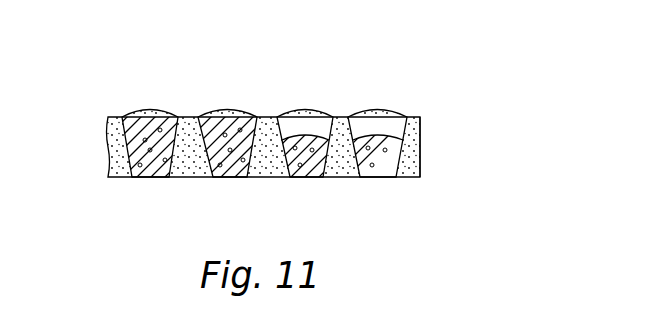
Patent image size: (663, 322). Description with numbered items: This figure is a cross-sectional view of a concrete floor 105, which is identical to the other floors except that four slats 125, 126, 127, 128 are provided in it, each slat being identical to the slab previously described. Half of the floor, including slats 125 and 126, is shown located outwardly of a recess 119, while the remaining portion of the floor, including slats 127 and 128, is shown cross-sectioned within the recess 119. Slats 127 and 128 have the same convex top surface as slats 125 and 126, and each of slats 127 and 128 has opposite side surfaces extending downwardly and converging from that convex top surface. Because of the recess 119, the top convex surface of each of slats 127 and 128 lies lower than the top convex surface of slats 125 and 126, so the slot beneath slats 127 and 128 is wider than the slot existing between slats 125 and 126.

The concrete floor 105 is at (433, 88).
The recess 119 is at (420, 132).
The slat 125 is at (147, 112).
The slat 126 is at (230, 112).
The slat 127 is at (308, 120).
The slat 128 is at (375, 117).